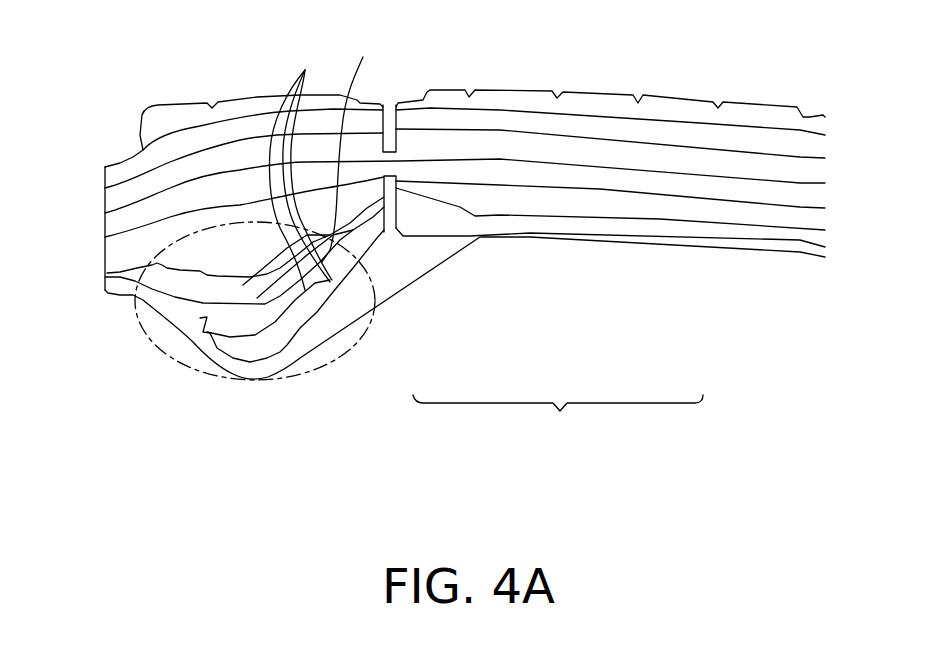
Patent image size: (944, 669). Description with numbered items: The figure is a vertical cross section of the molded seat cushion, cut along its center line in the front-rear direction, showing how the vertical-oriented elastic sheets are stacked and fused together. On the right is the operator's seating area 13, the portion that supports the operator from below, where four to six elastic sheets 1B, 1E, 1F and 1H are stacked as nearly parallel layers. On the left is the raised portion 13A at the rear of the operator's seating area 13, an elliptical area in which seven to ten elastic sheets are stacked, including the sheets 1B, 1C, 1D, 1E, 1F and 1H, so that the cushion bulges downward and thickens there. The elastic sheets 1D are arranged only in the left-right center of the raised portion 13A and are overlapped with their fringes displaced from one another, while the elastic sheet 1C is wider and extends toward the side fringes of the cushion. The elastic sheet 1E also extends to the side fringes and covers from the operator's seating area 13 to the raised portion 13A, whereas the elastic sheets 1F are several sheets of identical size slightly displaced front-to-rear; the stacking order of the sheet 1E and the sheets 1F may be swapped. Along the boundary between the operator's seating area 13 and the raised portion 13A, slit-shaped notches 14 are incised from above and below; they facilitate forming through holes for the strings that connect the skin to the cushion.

The vertical-oriented elastic sheet 1H is at (152, 160).
The elastic sheet 1E is at (128, 193).
The elastic sheets 1F is at (130, 224).
The vertical-oriented elastic sheet 1B is at (110, 288).
The elastic sheet 1C is at (152, 285).
The elastic sheets 1D is at (300, 162).
The notches 14 is at (393, 120).
The raised portion 13A is at (365, 395).
The operator's seating area 13 is at (558, 423).